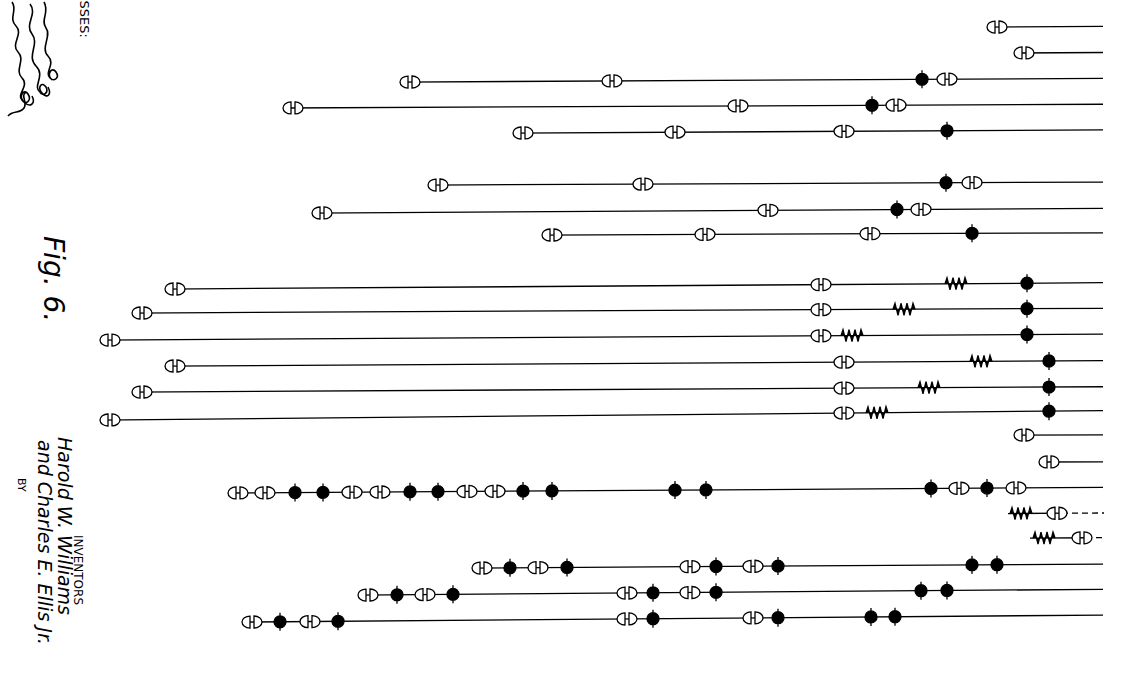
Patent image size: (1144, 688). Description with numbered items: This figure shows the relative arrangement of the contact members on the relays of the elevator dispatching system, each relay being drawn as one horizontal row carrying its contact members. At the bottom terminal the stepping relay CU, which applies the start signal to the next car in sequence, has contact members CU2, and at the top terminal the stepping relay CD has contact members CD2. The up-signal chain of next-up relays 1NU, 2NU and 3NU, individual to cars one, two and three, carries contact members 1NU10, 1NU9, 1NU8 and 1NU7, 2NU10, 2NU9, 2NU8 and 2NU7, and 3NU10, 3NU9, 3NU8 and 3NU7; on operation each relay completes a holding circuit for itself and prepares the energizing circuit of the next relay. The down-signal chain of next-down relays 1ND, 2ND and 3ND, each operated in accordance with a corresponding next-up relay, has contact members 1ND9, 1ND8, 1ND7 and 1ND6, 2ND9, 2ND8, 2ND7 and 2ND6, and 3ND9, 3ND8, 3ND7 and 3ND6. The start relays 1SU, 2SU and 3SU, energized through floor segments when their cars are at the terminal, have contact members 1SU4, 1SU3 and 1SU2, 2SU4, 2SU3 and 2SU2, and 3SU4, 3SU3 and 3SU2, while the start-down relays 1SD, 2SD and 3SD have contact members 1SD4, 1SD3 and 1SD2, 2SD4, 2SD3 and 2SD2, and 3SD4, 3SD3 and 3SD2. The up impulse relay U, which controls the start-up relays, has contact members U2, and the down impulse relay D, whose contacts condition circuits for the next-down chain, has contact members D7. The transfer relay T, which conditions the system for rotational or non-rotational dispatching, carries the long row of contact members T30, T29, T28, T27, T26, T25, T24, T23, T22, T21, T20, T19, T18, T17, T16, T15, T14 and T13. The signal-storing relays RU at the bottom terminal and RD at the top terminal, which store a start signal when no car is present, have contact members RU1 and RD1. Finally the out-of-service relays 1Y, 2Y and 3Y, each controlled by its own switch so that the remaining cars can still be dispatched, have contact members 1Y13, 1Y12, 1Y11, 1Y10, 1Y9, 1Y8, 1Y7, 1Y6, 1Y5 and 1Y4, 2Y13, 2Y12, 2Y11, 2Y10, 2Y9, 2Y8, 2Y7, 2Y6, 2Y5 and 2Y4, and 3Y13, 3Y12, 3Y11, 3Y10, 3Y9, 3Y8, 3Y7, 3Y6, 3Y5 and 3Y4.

The stepping relay CU is at (1060, 19).
The contact CU2 is at (997, 0).
The stepping relay CD is at (1074, 46).
The contact CD2 is at (1041, 45).
The next-up relay 1NU is at (768, 73).
The contact 1NU10 is at (418, 75).
The contact 1NU9 is at (613, 74).
The contact 1NU8 is at (901, 72).
The contact 1NU7 is at (965, 71).
The next-up relay 2NU is at (710, 99).
The contact 2NU10 is at (302, 100).
The contact 2NU9 is at (738, 98).
The contact 2NU8 is at (857, 98).
The contact 2NU7 is at (913, 97).
The next-up relay 3NU is at (828, 125).
The contact 3NU10 is at (546, 125).
The contact 3NU9 is at (678, 124).
The contact 3NU8 is at (832, 123).
The contact 3NU7 is at (953, 124).
The next-down relay 1ND is at (783, 178).
The contact 1ND9 is at (447, 178).
The contact 1ND8 is at (636, 177).
The contact 1ND7 is at (933, 177).
The contact 1ND6 is at (991, 175).
The next-down relay 2ND is at (726, 204).
The contact 2ND9 is at (329, 205).
The contact 2ND8 is at (763, 202).
The contact 2ND7 is at (881, 203).
The contact 2ND6 is at (945, 202).
The next-down relay 3ND is at (841, 227).
The contact 3ND9 is at (563, 228).
The contact 3ND8 is at (703, 227).
The contact 3ND7 is at (861, 225).
The contact 3ND6 is at (994, 226).
The start relay 1SU is at (654, 280).
The contact 1SU4 is at (191, 282).
The contact 1SU3 is at (816, 278).
The contact 1SU2 is at (1032, 277).
The start relay 2SU is at (637, 304).
The contact 2SU4 is at (157, 305).
The contact 2SU3 is at (801, 303).
The contact 2SU2 is at (1048, 302).
The start relay 3SU is at (620, 331).
The contact 3SU4 is at (120, 332).
The contact 3SU3 is at (788, 329).
The contact 3SU2 is at (1049, 328).
The start-down relay 1SD is at (654, 357).
The contact 1SD4 is at (191, 358).
The contact 1SD3 is at (819, 355).
The contact 1SD2 is at (1071, 355).
The start-down relay 2SD is at (638, 383).
The contact 2SD4 is at (166, 384).
The contact 2SD3 is at (816, 380).
The contact 2SD2 is at (1024, 381).
The start-down relay 3SD is at (622, 409).
The contact 3SD4 is at (131, 412).
The contact 3SD3 is at (810, 406).
The contact 3SD2 is at (1022, 405).
The up impulse relay U is at (1058, 428).
The contact U2 is at (1014, 427).
The down impulse relay D is at (1081, 455).
The contact D7 is at (1057, 454).
The transfer relay T is at (662, 480).
The contact T30 is at (225, 486).
The contact T29 is at (262, 482).
The contact T28 is at (294, 487).
The contact T27 is at (321, 482).
The contact T26 is at (346, 485).
The contact T25 is at (376, 481).
The contact T24 is at (406, 487).
The contact T23 is at (428, 482).
The contact T22 is at (462, 484).
The contact T21 is at (486, 480).
The contact T20 is at (519, 481).
The contact T19 is at (561, 481).
The contact T18 is at (666, 483).
The contact T17 is at (714, 483).
The contact T16 is at (914, 481).
The contact T15 is at (952, 480).
The contact T14 is at (986, 481).
The contact T13 is at (1022, 480).
The signal-storing relay RU is at (1067, 506).
The contact RU1 is at (1062, 505).
The signal-storing relay RD is at (1080, 531).
The contact RD1 is at (1088, 530).
The out-of-service relay 1Y is at (778, 558).
The contact 1Y13 is at (458, 563).
The contact 1Y12 is at (494, 560).
The contact 1Y11 is at (539, 559).
The contact 1Y10 is at (583, 559).
The contact 1Y9 is at (670, 557).
The contact 1Y8 is at (706, 558).
The contact 1Y7 is at (746, 556).
The contact 1Y6 is at (789, 559).
The contact 1Y5 is at (958, 557).
The contact 1Y4 is at (1001, 557).
The out-of-service relay 2Y is at (719, 582).
The contact 2Y13 is at (342, 588).
The contact 2Y12 is at (396, 589).
The contact 2Y11 is at (435, 583).
The contact 2Y10 is at (476, 589).
The contact 2Y9 is at (607, 586).
The contact 2Y8 is at (643, 583).
The contact 2Y7 is at (685, 585).
The contact 2Y6 is at (734, 582).
The contact 2Y5 is at (898, 583).
The contact 2Y4 is at (963, 582).
The out-of-service relay 3Y is at (657, 609).
The contact 3Y13 is at (222, 619).
The contact 3Y12 is at (256, 612).
The contact 3Y11 is at (320, 610).
The contact 3Y10 is at (362, 616).
The contact 3Y9 is at (605, 612).
The contact 3Y8 is at (671, 612).
The contact 3Y7 is at (745, 608).
The contact 3Y6 is at (787, 609).
The contact 3Y5 is at (853, 610).
The contact 3Y4 is at (912, 609).